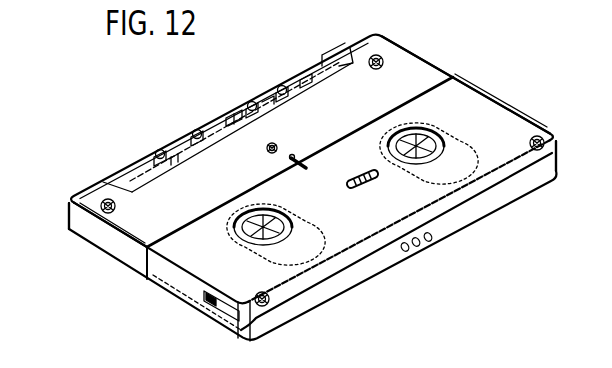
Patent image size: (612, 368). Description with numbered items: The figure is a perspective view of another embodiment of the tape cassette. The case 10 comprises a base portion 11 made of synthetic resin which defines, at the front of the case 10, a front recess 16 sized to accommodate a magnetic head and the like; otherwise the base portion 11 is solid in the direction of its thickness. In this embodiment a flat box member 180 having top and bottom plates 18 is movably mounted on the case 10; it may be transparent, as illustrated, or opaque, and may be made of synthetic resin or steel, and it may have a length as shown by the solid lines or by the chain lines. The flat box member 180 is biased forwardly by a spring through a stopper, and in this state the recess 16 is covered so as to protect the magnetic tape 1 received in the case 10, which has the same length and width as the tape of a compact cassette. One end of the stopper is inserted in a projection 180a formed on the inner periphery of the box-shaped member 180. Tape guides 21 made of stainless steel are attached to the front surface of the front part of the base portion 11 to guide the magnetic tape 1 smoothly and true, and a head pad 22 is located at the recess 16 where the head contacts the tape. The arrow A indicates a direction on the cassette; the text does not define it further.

The magnetic tape 1 is at (328, 76).
The case 10 is at (477, 222).
The base portion 11 is at (334, 292).
The front recess 16 is at (248, 118).
The closure plates 18 is at (402, 77).
The tape guides 21 is at (161, 147).
The head pad 22 is at (236, 137).
The flat box member 180 is at (72, 222).
The projection 180a is at (296, 156).
The direction A is at (497, 90).